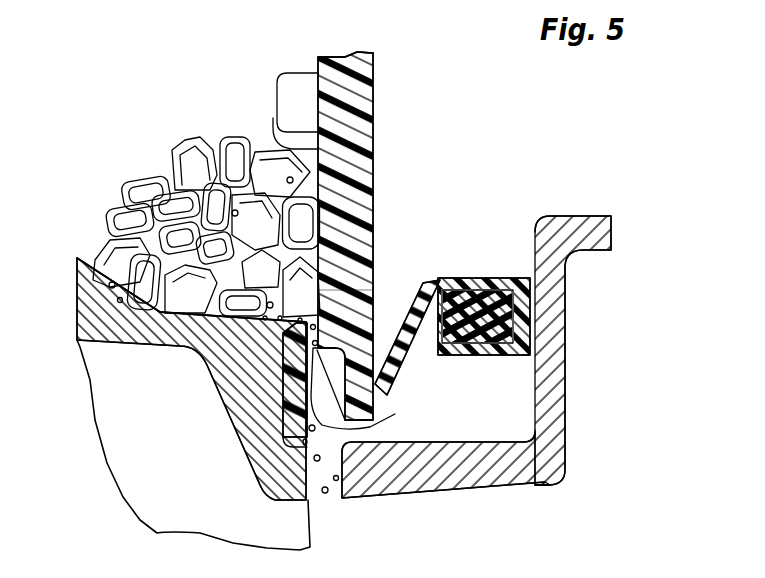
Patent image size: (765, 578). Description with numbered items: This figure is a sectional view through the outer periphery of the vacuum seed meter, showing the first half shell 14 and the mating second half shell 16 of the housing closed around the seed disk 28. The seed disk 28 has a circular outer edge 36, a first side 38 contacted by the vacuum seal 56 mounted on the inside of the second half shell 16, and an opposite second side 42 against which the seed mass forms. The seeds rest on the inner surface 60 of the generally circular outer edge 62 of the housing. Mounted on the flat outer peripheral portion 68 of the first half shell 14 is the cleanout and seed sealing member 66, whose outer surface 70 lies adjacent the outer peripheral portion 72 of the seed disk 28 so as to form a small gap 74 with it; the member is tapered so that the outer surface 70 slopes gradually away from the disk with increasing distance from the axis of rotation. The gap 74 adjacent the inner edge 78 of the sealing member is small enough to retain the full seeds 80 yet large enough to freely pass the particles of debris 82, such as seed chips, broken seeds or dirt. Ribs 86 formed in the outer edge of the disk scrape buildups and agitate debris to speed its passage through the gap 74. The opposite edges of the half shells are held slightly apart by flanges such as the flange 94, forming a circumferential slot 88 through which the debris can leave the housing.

The first half shell 14 is at (215, 388).
The second half shell 16 is at (494, 488).
The seed disk 28 is at (377, 120).
The circular outer edge 36 is at (360, 428).
The first side 38 is at (374, 75).
The second side 42 is at (273, 132).
The vacuum seal 56 is at (407, 318).
The inner surface 60 is at (175, 318).
The outer edge 62 is at (443, 494).
The cleanout and seed sealing member 66 is at (287, 418).
The outer peripheral portion 68 is at (283, 395).
The outer surface 70 is at (340, 433).
The outer peripheral portion 72 is at (283, 346).
The gap 74 is at (362, 367).
The inner edge 78 is at (307, 298).
The full seeds 80 is at (178, 158).
The particles of debris 82 is at (318, 462).
The rib 86 is at (343, 384).
The slot 88 is at (333, 480).
The flange 94 is at (345, 470).